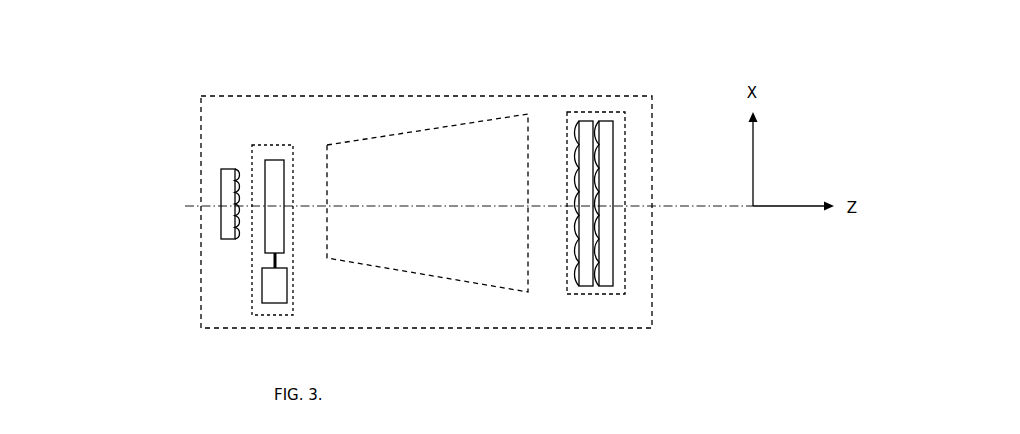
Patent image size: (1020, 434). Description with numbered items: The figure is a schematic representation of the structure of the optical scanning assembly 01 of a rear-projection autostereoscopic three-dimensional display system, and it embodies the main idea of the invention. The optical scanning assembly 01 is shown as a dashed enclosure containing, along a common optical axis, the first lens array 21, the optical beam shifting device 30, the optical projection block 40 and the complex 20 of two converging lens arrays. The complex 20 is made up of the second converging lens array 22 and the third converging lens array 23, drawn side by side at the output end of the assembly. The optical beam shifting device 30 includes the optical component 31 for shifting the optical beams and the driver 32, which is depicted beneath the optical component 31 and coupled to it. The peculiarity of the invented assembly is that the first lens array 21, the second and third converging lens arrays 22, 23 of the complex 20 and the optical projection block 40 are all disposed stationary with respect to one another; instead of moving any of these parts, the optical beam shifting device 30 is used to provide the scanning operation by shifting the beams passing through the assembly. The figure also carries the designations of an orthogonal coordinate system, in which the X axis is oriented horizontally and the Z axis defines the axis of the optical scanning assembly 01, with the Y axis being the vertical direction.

The optical scanning assembly 01 is at (198, 254).
The first lens array 21 is at (221, 190).
The optical beam shifting device 30 is at (266, 146).
The optical component 31 is at (283, 160).
The driver 32 is at (287, 288).
The optical projection block 40 is at (435, 128).
The complex of two converging lens arrays 20 is at (625, 285).
The second converging lens array 22 is at (589, 120).
The third converging lens array 23 is at (610, 120).